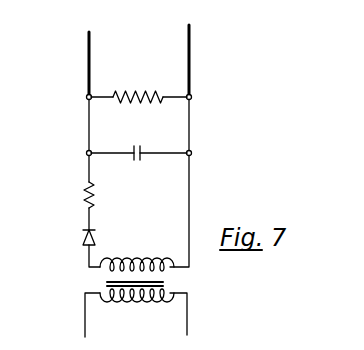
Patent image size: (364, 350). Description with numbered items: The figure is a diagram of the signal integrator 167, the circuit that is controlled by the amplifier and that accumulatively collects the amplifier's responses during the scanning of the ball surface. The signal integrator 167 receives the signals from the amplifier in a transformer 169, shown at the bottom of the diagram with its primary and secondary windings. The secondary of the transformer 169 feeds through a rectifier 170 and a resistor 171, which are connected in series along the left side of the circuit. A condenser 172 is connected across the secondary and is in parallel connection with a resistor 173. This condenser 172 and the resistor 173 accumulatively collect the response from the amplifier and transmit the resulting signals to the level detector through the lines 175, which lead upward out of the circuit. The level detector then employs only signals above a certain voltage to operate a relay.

The signal integrator 167 is at (222, 126).
The transformer 169 is at (180, 285).
The rectifier 170 is at (83, 233).
The resistor 171 is at (80, 200).
The condenser 172 is at (132, 160).
The resistor 173 is at (136, 92).
The lines 175 is at (87, 62).